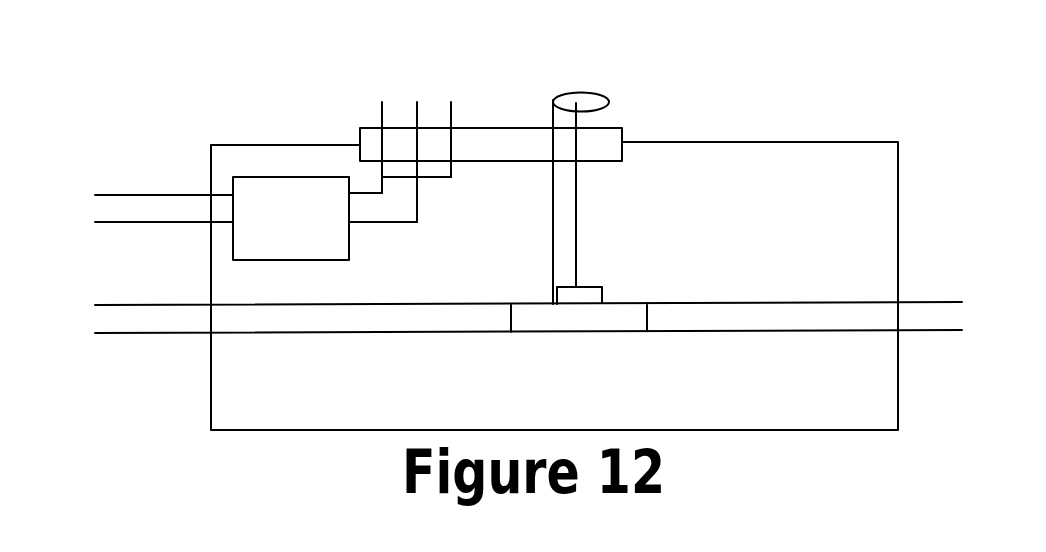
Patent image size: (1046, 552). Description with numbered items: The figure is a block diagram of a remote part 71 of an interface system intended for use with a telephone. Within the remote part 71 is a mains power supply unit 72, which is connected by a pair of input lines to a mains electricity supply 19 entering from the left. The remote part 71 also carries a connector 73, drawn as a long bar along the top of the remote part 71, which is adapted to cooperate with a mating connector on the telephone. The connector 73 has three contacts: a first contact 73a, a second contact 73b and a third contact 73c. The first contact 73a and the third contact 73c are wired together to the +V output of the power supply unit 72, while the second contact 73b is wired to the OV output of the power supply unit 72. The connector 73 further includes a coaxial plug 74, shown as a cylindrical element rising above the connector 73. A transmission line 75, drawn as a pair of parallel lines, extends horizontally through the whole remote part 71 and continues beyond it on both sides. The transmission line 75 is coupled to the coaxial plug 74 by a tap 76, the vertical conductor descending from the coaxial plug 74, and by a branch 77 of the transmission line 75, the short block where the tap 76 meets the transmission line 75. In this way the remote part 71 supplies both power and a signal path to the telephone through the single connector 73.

The mains electricity supply 19 is at (133, 195).
The remote part 71 is at (817, 150).
The mains power supply unit 72 is at (325, 218).
The connector 73 is at (623, 138).
The first contact 73a is at (381, 93).
The second contact 73b is at (417, 92).
The third contact 73c is at (452, 93).
The coaxial plug 74 is at (585, 93).
The transmission line 75 is at (338, 322).
The tap 76 is at (567, 218).
The branch 77 is at (592, 299).